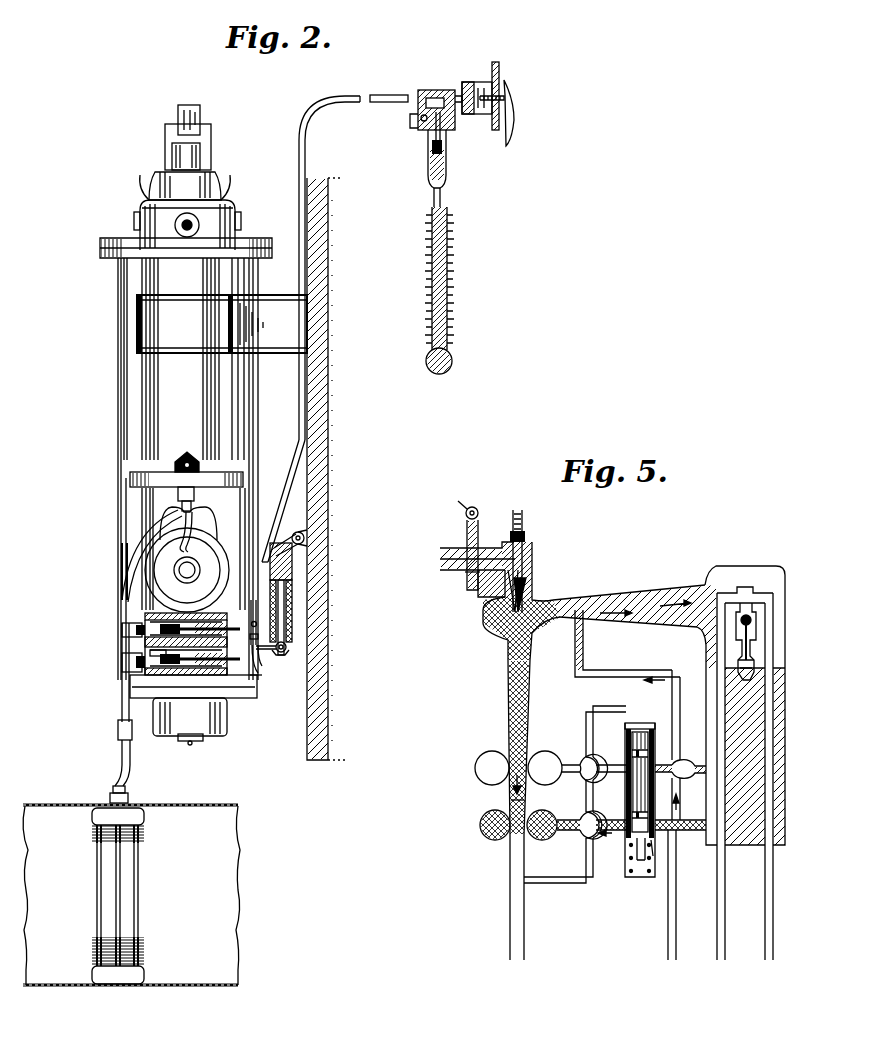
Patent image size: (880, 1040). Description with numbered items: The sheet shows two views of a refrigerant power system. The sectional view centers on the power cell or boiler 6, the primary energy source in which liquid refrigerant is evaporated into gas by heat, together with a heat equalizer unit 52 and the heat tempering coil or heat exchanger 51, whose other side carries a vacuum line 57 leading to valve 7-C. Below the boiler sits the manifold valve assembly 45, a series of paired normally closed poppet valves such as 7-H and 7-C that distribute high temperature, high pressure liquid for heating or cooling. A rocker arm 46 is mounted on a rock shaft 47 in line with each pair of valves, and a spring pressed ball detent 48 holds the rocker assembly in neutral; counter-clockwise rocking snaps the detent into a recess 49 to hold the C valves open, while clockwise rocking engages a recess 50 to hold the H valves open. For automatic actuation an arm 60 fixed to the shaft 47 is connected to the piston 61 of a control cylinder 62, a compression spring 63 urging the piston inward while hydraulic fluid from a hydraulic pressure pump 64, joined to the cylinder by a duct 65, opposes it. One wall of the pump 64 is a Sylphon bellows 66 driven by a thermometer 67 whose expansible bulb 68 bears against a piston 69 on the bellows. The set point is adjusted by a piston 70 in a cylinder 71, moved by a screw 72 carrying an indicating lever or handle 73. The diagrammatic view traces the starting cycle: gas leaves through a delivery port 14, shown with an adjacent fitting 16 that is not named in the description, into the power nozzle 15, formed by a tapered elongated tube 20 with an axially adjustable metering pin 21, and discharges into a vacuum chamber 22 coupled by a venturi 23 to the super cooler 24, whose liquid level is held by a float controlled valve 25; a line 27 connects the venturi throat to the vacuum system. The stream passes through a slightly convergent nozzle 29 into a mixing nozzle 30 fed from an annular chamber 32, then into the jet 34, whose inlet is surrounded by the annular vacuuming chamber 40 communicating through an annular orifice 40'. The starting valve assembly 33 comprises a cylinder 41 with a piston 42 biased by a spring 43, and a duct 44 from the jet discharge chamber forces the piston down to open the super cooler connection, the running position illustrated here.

In FIG. 2, the power cell or boiler 6 is at (116, 500).
In FIG. 2, the heat equalizer unit 52 is at (218, 202).
In FIG. 2, the duct 65 is at (318, 102).
In FIG. 2, the hydraulic pressure pump 64 is at (436, 92).
In FIG. 2, the Sylphon bellows 66 is at (420, 120).
In FIG. 2, the cylinder 71 is at (472, 82).
In FIG. 2, the piston 70 is at (494, 62).
In FIG. 2, the screw 72 is at (507, 86).
In FIG. 2, the indicating lever or handle 73 is at (516, 102).
In FIG. 2, the piston 69 is at (448, 150).
In FIG. 2, the expansible bulb 68 is at (446, 170).
In FIG. 2, the thermometer 67 is at (446, 198).
In FIG. 2, the H valve 7-H is at (132, 614).
In FIG. 2, the C valve 7-C is at (180, 682).
In FIG. 2, the manifold valve assembly 45 is at (138, 648).
In FIG. 2, the recess 50 is at (234, 677).
In FIG. 2, the recess 49 is at (257, 623).
In FIG. 2, the spring pressed ball detent 48 is at (257, 636).
In FIG. 2, the rock shaft 47 is at (262, 656).
In FIG. 2, the rocker arm 46 is at (260, 678).
In FIG. 2, the arm 60 is at (278, 651).
In FIG. 2, the piston 61 is at (290, 580).
In FIG. 2, the control cylinder 62 is at (283, 616).
In FIG. 2, the compression spring 63 is at (292, 597).
In FIG. 2, the vacuum line 57 is at (122, 790).
In FIG. 2, the heat tempering coil or heat exchanger 51 is at (146, 832).
In FIG. 5, the delivery port 14 is at (456, 570).
In FIG. 5, the bolt 16 is at (464, 548).
In FIG. 5, the power nozzle 15 is at (528, 575).
In FIG. 5, the metering pin 21 is at (530, 590).
In FIG. 5, the elongated tube 20 is at (535, 602).
In FIG. 5, the vacuum chamber 22 is at (497, 622).
In FIG. 5, the venturi 23 is at (624, 606).
In FIG. 5, the super cooler 24 is at (744, 576).
In FIG. 5, the float controlled valve 25 is at (750, 620).
In FIG. 5, the line 27 is at (576, 664).
In FIG. 5, the nozzle 29 is at (510, 728).
In FIG. 5, the annular chamber 32 is at (546, 756).
In FIG. 5, the mixing nozzle 30 is at (510, 806).
In FIG. 5, the annular orifice 40' is at (478, 825).
In FIG. 5, the annular vacuuming chamber 40 is at (574, 833).
In FIG. 5, the jet 34 is at (516, 862).
In FIG. 5, the duct 44 is at (618, 709).
In FIG. 5, the piston 42 is at (634, 800).
In FIG. 5, the cylinder 41 is at (622, 868).
In FIG. 5, the starting valve assembly 33 is at (640, 882).
In FIG. 5, the spring 43 is at (654, 868).